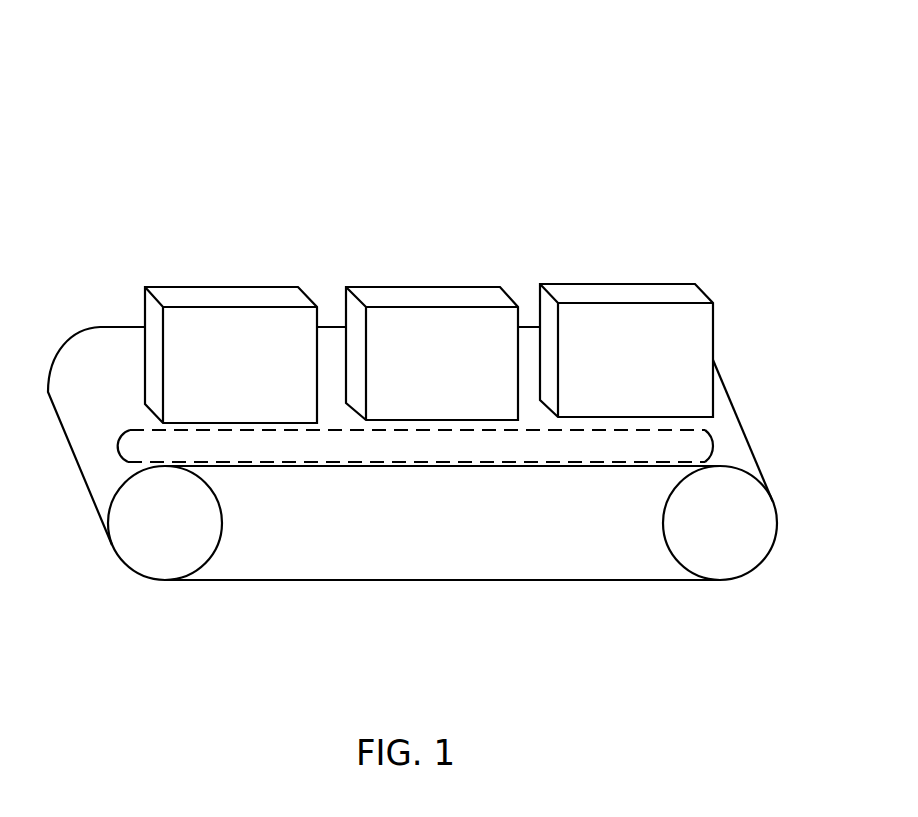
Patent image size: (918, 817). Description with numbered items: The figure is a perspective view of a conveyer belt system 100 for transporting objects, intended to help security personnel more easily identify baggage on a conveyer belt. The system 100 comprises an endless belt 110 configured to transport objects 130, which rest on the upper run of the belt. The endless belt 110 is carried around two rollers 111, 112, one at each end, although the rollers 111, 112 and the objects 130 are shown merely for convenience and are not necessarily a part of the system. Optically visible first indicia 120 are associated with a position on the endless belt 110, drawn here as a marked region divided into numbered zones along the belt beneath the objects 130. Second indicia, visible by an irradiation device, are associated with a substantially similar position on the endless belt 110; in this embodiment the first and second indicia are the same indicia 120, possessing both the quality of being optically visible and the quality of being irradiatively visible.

The system 100 is at (163, 118).
The endless belt 110 is at (88, 355).
The roller 111 is at (160, 570).
The roller 112 is at (728, 555).
The first indicia 120 is at (713, 442).
The objects 130 is at (635, 290).